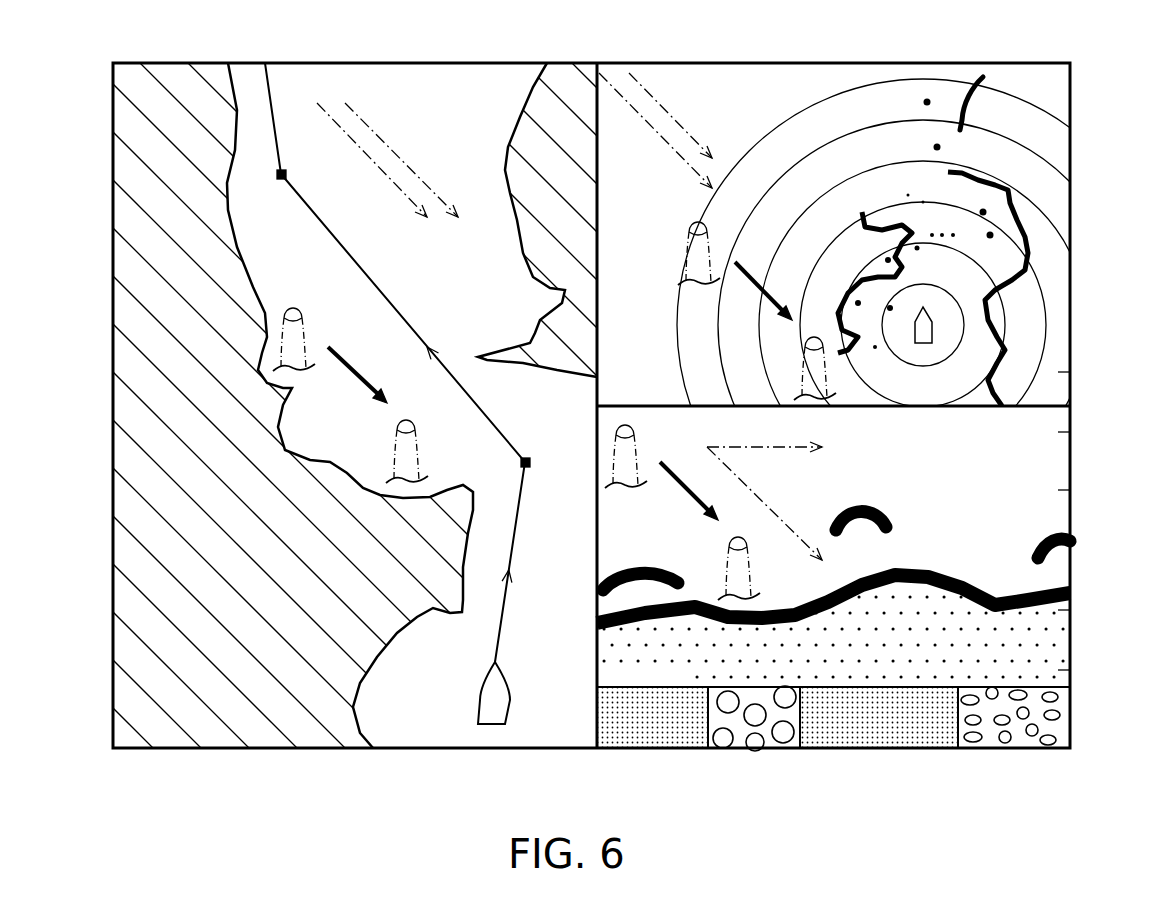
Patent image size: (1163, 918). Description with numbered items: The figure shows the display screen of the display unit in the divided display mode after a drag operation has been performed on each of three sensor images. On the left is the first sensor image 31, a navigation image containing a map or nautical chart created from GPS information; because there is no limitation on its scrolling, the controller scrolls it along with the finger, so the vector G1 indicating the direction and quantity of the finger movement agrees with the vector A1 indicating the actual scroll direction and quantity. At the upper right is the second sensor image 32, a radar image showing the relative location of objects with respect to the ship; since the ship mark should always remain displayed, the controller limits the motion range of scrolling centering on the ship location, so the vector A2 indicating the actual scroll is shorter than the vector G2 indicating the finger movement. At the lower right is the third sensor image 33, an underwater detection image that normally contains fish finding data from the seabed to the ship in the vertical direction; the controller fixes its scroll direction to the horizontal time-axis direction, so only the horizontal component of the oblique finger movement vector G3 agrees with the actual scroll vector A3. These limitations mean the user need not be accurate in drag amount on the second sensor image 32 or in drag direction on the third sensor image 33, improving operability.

The first sensor image 31 is at (112, 200).
The second sensor image 32 is at (1072, 100).
The third sensor image 33 is at (1073, 657).
The vector indicating actual scroll direction and quantity A1 is at (403, 162).
The vector indicating direction and quantity of finger movement G1 is at (372, 160).
The vector indicating actual scroll direction and quantity A2 is at (688, 131).
The vector indicating direction and quantity of finger movement G2 is at (655, 131).
The vector indicating actual scroll direction and quantity A3 is at (765, 447).
The vector indicating direction and quantity of finger movement G3 is at (765, 498).